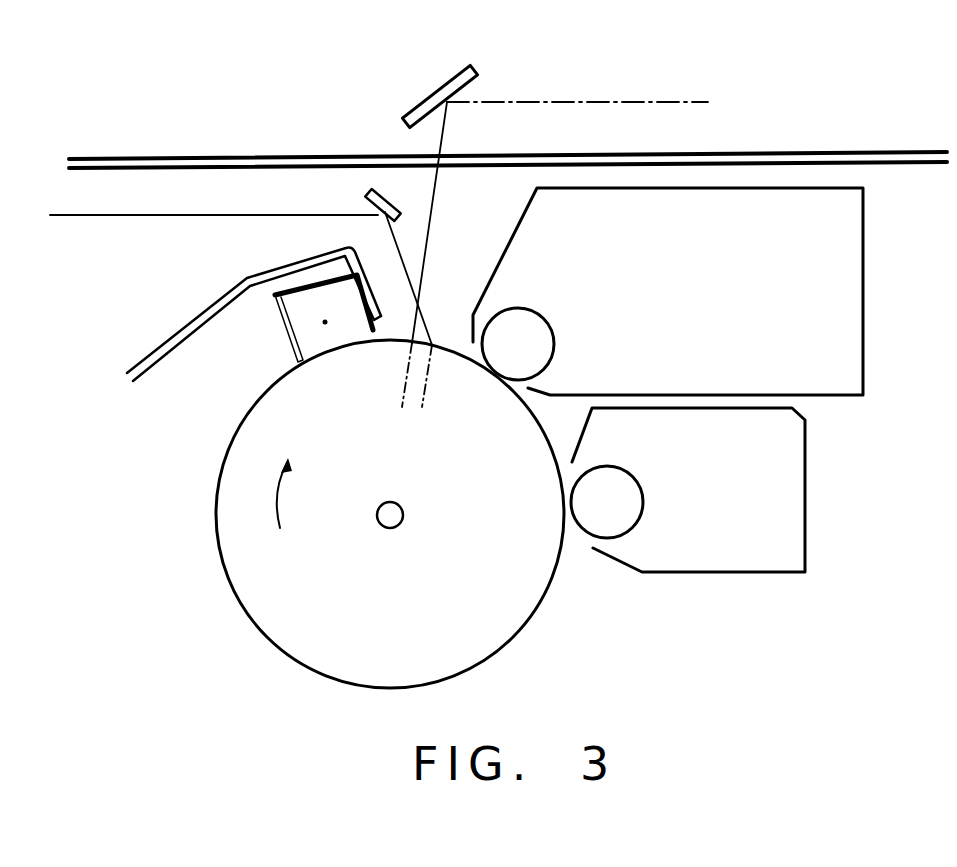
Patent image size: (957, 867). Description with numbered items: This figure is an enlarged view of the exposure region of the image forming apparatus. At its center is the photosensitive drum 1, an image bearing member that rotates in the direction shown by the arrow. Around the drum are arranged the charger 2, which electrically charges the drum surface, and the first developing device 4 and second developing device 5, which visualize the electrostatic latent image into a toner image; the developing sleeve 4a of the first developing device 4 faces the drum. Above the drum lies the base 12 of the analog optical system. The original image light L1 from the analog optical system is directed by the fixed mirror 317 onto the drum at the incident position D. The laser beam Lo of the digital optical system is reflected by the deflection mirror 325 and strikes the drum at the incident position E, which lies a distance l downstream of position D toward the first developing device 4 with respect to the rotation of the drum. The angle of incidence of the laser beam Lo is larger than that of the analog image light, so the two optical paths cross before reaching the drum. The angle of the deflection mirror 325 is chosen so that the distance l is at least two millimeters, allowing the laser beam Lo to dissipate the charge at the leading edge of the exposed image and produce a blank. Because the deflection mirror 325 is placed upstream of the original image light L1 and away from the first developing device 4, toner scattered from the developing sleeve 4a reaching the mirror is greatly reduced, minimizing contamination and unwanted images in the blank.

The photosensitive drum 1 is at (232, 560).
The charger 2 is at (287, 333).
The first developing device 4 is at (845, 325).
The developing sleeve 4a is at (548, 333).
The second developing device 5 is at (785, 503).
The base 12 is at (133, 158).
The fixed mirror 317 is at (474, 64).
The deflection mirror 325 is at (371, 193).
The laser beam Lo is at (158, 216).
The original image light L1 is at (427, 258).
The incident position of original image light D is at (407, 348).
The incident position of laser beam E is at (436, 348).
The distance l is at (452, 400).